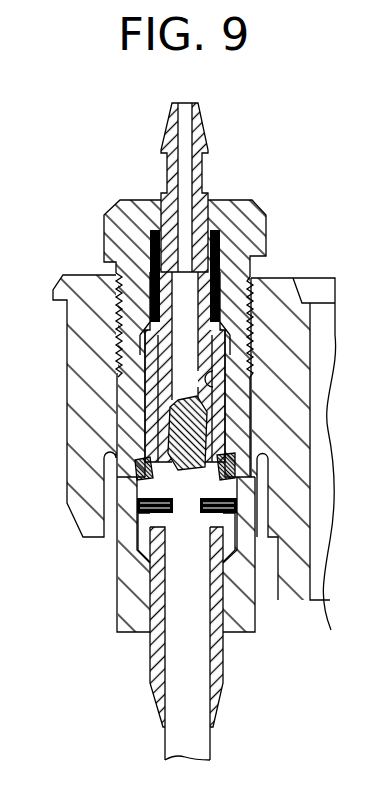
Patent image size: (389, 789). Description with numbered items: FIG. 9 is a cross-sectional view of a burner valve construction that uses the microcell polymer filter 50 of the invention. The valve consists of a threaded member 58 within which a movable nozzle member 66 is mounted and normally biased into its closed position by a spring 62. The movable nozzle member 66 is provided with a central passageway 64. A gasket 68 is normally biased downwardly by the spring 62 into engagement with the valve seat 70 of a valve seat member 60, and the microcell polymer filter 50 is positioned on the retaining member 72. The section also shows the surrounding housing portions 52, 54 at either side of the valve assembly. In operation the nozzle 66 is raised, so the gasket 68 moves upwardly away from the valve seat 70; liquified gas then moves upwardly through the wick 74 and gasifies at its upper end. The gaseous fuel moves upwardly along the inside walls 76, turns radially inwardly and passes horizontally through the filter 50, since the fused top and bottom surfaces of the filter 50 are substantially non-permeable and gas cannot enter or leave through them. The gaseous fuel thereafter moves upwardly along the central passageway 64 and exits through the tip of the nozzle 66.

The microcell polymer filter 50 is at (237, 505).
The left housing block 52 is at (84, 406).
The right housing block 54 is at (293, 630).
The threaded member 58 is at (238, 215).
The valve seat member 60 is at (233, 345).
The spring 62 is at (218, 260).
The central passageway 64 is at (152, 258).
The movable nozzle member 66 is at (207, 128).
The gasket 68 is at (213, 415).
The valve seat 70 is at (133, 493).
The retaining member 72 is at (200, 527).
The wick 74 is at (190, 737).
The inside walls 76 is at (200, 492).